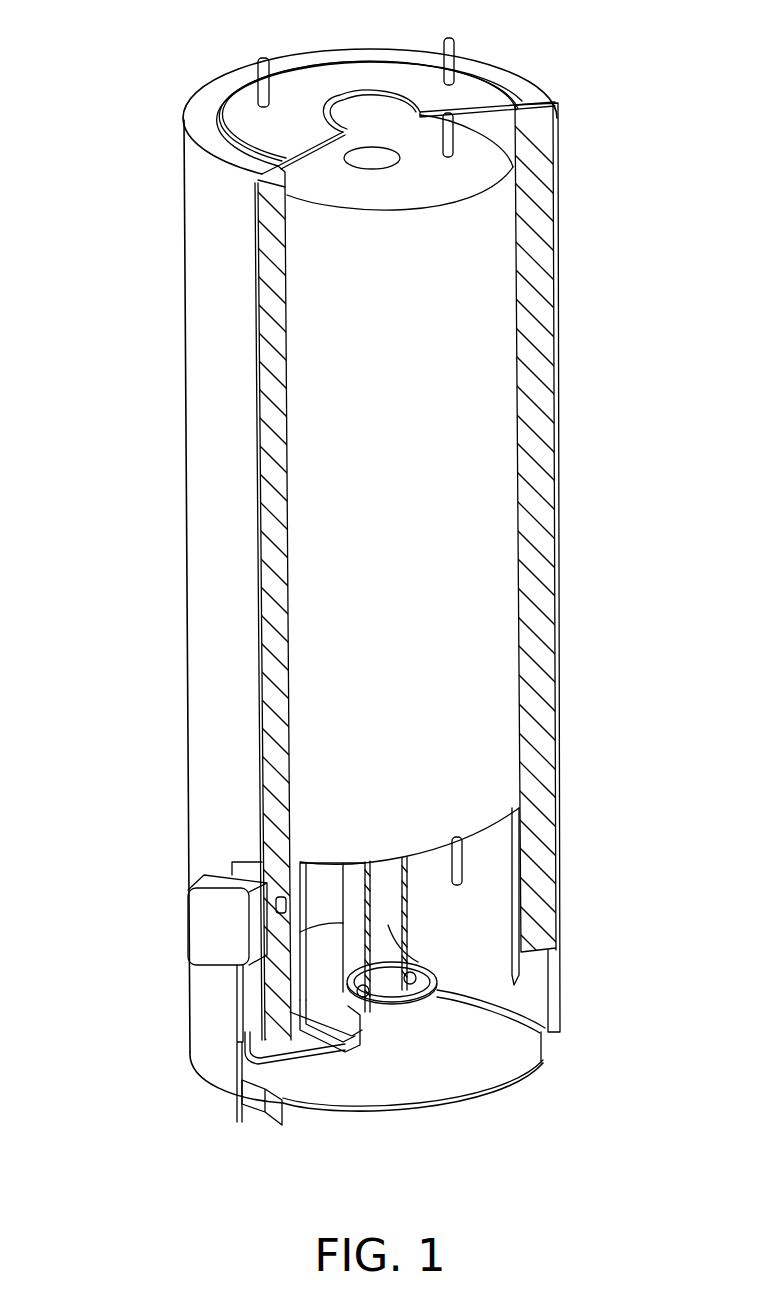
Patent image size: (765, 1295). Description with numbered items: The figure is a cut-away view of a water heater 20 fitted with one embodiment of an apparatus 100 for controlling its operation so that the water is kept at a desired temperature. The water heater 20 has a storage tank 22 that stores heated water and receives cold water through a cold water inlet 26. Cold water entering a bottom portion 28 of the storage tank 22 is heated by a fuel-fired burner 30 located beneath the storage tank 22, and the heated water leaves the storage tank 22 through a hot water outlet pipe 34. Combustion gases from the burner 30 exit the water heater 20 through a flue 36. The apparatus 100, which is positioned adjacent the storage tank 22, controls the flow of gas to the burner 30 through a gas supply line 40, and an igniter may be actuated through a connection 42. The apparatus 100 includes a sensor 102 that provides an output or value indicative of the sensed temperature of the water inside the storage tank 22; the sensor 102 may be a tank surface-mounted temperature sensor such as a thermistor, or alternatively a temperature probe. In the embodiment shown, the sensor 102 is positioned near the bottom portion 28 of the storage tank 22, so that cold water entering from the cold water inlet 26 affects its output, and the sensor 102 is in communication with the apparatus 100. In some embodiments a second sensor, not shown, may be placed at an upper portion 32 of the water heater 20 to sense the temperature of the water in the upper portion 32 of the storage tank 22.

The water heater 20 is at (136, 536).
The storage tank 22 is at (485, 812).
The cold water inlet 26 is at (455, 140).
The bottom portion 28 is at (495, 918).
The fuel-fired burner 30 is at (403, 988).
The upper portion 32 is at (478, 255).
The hot water outlet pipe 34 is at (247, 72).
The flue 36 is at (437, 966).
The gas supply line 40 is at (320, 1050).
The connection 42 is at (286, 1045).
The apparatus 100 is at (216, 940).
The sensor 102 is at (283, 896).